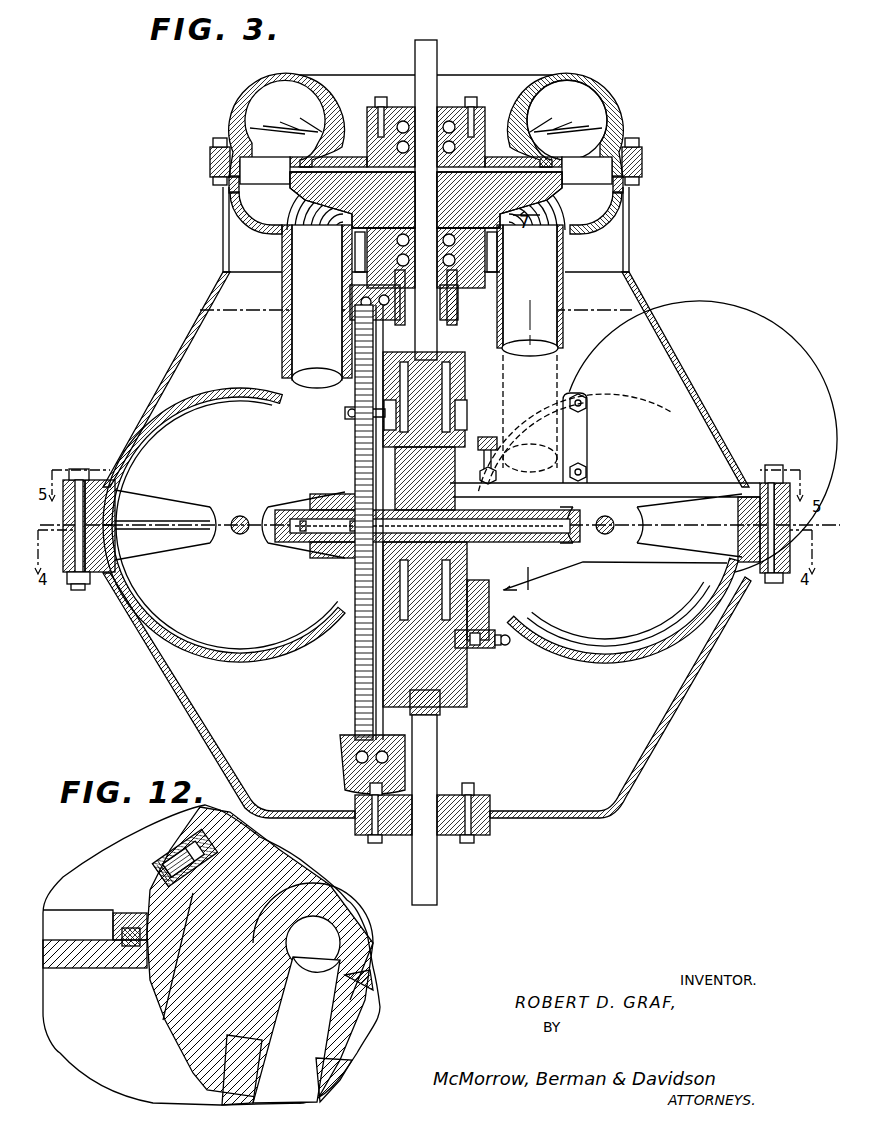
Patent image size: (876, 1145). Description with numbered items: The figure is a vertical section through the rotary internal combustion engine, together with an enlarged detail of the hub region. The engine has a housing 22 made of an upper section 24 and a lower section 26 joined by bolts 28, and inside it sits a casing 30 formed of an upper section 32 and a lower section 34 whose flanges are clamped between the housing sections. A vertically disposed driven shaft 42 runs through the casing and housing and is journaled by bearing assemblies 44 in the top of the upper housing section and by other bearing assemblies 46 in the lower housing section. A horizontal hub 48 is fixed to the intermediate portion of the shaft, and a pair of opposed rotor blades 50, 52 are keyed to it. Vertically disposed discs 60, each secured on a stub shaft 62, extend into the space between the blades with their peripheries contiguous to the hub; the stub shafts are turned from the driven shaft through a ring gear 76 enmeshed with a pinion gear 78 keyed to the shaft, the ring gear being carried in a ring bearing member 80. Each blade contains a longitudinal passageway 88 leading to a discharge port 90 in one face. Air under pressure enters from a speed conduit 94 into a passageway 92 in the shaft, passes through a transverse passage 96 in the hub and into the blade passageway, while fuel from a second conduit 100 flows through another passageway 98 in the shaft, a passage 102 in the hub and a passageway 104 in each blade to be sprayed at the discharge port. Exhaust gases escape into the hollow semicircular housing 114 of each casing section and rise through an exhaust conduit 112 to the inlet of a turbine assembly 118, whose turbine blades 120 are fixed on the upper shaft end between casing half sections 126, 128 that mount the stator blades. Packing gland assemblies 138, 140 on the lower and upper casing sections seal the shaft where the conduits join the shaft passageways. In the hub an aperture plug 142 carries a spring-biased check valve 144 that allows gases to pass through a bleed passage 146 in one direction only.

In FIG. 3, the housing 22 is at (136, 402).
In FIG. 3, the upper section 24 is at (142, 440).
In FIG. 3, the lower section 26 is at (132, 608).
In FIG. 3, the bolts 28 is at (78, 592).
In FIG. 3, the casing 30 is at (250, 380).
In FIG. 3, the upper section 32 is at (340, 462).
In FIG. 3, the lower section 34 is at (372, 622).
In FIG. 3, the driven shaft 42 is at (438, 757).
In FIG. 12, the driven shaft 42 is at (373, 943).
In FIG. 3, the bearing assemblies 44 is at (440, 105).
In FIG. 3, the bearing assemblies 46 is at (455, 840).
In FIG. 12, the hub 48 is at (190, 1035).
In FIG. 3, the rotor blade 50 is at (300, 543).
In FIG. 3, the rotor blade 52 is at (575, 507).
In FIG. 12, the rotor blade 52 is at (320, 1085).
In FIG. 3, the disc 60 is at (172, 628).
In FIG. 12, the disc 60 is at (105, 962).
In FIG. 3, the stub shaft 62 is at (605, 532).
In FIG. 3, the ring gear 76 is at (350, 690).
In FIG. 3, the pinion gear 78 is at (450, 305).
In FIG. 3, the ring bearing member 80 is at (345, 782).
In FIG. 3, the passageway 88 is at (345, 543).
In FIG. 12, the passageway 88 is at (292, 1076).
In FIG. 3, the discharge port 90 is at (320, 543).
In FIG. 3, the passageway 92 is at (465, 650).
In FIG. 3, the speed conduit 94 is at (508, 648).
In FIG. 3, the transverse passage 96 is at (518, 595).
In FIG. 3, the passageway 98 is at (458, 418).
In FIG. 3, the second conduit 100 is at (345, 418).
In FIG. 3, the passage 102 is at (335, 562).
In FIG. 3, the passageway 104 is at (310, 496).
In FIG. 3, the exhaust conduit 112 is at (283, 328).
In FIG. 3, the hollow semicircular housing 114 is at (262, 648).
In FIG. 3, the turbine assembly 118 is at (619, 95).
In FIG. 3, the turbine blades 120 is at (585, 90).
In FIG. 3, the casing half section 126 is at (607, 134).
In FIG. 3, the casing half section 128 is at (592, 212).
In FIG. 3, the packing gland assembly 138 is at (455, 705).
In FIG. 3, the packing gland assembly 140 is at (456, 375).
In FIG. 12, the aperture plug 142 is at (168, 845).
In FIG. 12, the spring-biased check valve 144 is at (175, 870).
In FIG. 12, the bleed passage 146 is at (163, 1022).